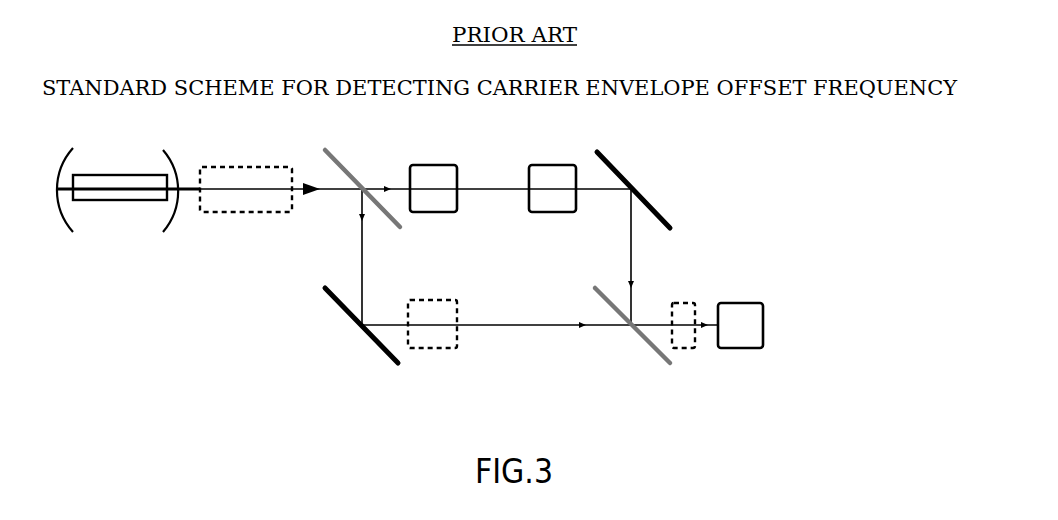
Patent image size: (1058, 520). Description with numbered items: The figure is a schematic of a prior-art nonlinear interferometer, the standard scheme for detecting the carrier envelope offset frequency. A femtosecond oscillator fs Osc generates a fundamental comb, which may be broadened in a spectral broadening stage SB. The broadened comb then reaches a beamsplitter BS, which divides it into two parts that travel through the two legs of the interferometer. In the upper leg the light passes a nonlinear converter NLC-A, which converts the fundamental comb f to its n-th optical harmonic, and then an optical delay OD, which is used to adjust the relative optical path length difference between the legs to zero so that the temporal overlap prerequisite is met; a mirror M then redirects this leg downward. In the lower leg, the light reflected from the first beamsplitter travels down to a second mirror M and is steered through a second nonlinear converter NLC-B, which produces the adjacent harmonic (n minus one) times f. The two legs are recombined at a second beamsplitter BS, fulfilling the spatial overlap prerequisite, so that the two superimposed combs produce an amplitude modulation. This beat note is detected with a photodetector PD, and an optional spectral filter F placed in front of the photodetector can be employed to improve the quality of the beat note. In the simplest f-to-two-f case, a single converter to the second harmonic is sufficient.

The fs oscillator fs Osc is at (128, 182).
The spectral broadening SB is at (246, 175).
The beamsplitter BS is at (497, 253).
The nonlinear converter NLC-A is at (452, 177).
The optical delay OD is at (552, 177).
The mirror M is at (486, 250).
The nonlinear converter NLC-B is at (471, 315).
The spectral filter F is at (683, 313).
The photodetector PD is at (740, 313).